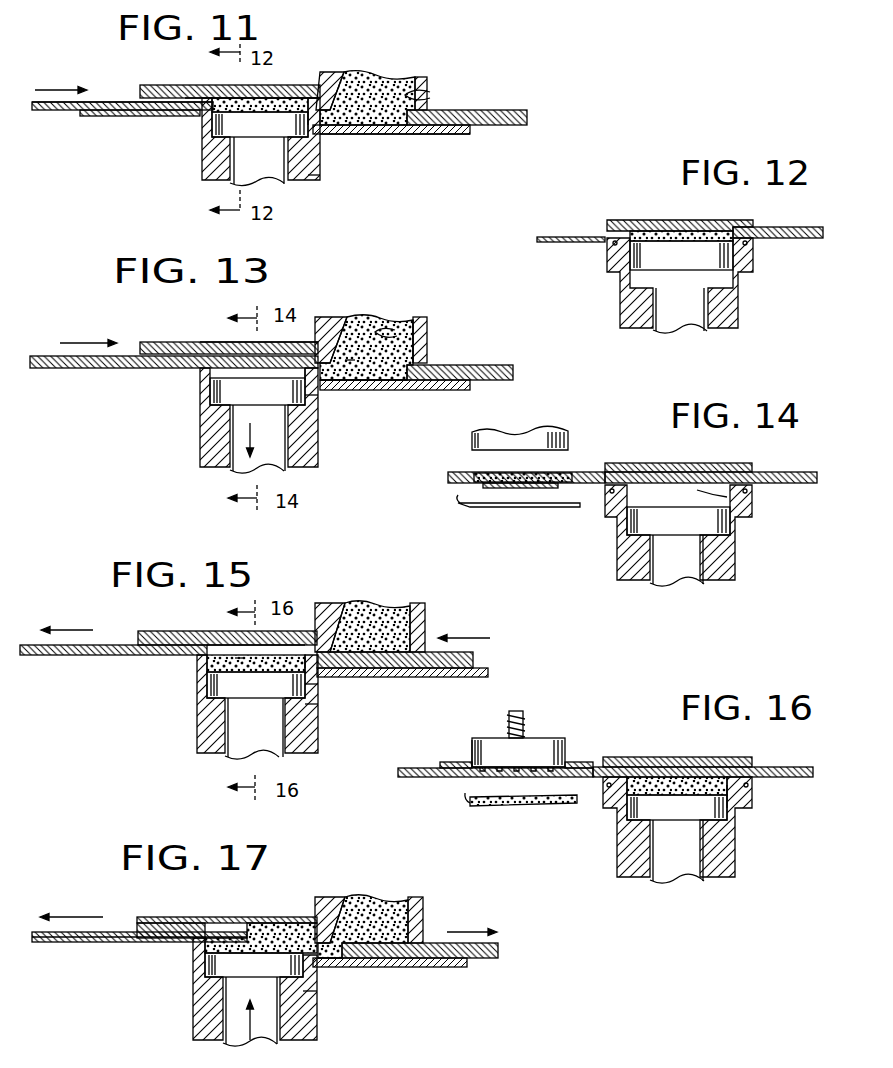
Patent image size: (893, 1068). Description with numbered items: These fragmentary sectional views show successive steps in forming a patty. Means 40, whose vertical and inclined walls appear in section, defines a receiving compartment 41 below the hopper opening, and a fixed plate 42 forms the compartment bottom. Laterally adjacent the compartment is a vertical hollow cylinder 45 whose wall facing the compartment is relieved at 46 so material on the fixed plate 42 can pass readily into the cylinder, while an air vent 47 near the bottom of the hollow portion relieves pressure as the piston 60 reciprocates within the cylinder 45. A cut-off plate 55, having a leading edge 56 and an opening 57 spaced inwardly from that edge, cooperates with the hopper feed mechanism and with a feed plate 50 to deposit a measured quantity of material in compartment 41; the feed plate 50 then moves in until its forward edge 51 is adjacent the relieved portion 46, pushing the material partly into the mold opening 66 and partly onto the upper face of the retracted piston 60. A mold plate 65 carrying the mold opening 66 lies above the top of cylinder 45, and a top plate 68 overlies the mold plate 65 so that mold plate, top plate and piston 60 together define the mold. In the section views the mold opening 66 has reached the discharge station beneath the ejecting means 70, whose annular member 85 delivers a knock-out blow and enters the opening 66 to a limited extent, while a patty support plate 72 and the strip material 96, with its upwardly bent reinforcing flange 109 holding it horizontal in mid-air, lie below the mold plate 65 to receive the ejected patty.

In FIG. 11, the means defining the compartment 40 is at (432, 83).
In FIG. 13, the means defining the compartment 40 is at (427, 321).
In FIG. 15, the means defining the compartment 40 is at (427, 614).
In FIG. 17, the means defining the compartment 40 is at (423, 905).
In FIG. 11, the receiving compartment 41 is at (428, 92).
In FIG. 13, the receiving compartment 41 is at (396, 328).
In FIG. 11, the fixed plate 42 is at (390, 135).
In FIG. 13, the fixed plate 42 is at (417, 391).
In FIG. 15, the fixed plate 42 is at (410, 678).
In FIG. 17, the fixed plate 42 is at (413, 968).
In FIG. 11, the hollow cylinder 45 is at (202, 168).
In FIG. 12, the hollow cylinder 45 is at (740, 303).
In FIG. 13, the hollow cylinder 45 is at (200, 447).
In FIG. 14, the hollow cylinder 45 is at (737, 562).
In FIG. 15, the hollow cylinder 45 is at (197, 732).
In FIG. 16, the hollow cylinder 45 is at (735, 850).
In FIG. 17, the hollow cylinder 45 is at (193, 1023).
In FIG. 11, the relieved portion of cylinder wall 46 is at (322, 118).
In FIG. 13, the relieved portion of cylinder wall 46 is at (318, 373).
In FIG. 15, the relieved portion of cylinder wall 46 is at (335, 665).
In FIG. 11, the air vent 47 is at (320, 158).
In FIG. 13, the air vent 47 is at (318, 395).
In FIG. 15, the air vent 47 is at (318, 704).
In FIG. 17, the air vent 47 is at (317, 991).
In FIG. 11, the feed plate 50 is at (490, 126).
In FIG. 13, the feed plate 50 is at (478, 366).
In FIG. 15, the feed plate 50 is at (473, 660).
In FIG. 17, the feed plate 50 is at (487, 962).
In FIG. 11, the forward edge of feed plate 51 is at (400, 130).
In FIG. 13, the forward edge of feed plate 51 is at (393, 386).
In FIG. 15, the forward edge of feed plate 51 is at (318, 684).
In FIG. 17, the forward edge of feed plate 51 is at (337, 958).
In FIG. 11, the cut-off plate 55 is at (52, 101).
In FIG. 13, the cut-off plate 55 is at (120, 355).
In FIG. 14, the cut-off plate 55 is at (752, 495).
In FIG. 15, the cut-off plate 55 is at (108, 645).
In FIG. 16, the cut-off plate 55 is at (752, 793).
In FIG. 17, the cut-off plate 55 is at (107, 931).
In FIG. 11, the leading edge of cut-off plate 56 is at (160, 114).
In FIG. 13, the leading edge of cut-off plate 56 is at (415, 350).
In FIG. 11, the opening in cut-off plate 57 is at (83, 100).
In FIG. 13, the opening in cut-off plate 57 is at (350, 360).
In FIG. 15, the opening in cut-off plate 57 is at (240, 660).
In FIG. 17, the opening in cut-off plate 57 is at (160, 943).
In FIG. 11, the piston 60 is at (262, 133).
In FIG. 12, the piston 60 is at (687, 266).
In FIG. 13, the piston 60 is at (259, 401).
In FIG. 14, the piston 60 is at (683, 530).
In FIG. 15, the piston 60 is at (259, 694).
In FIG. 16, the piston 60 is at (683, 817).
In FIG. 17, the piston 60 is at (257, 974).
In FIG. 11, the mold plate 65 is at (185, 97).
In FIG. 12, the mold plate 65 is at (797, 227).
In FIG. 13, the mold plate 65 is at (292, 342).
In FIG. 14, the mold plate 65 is at (776, 472).
In FIG. 15, the mold plate 65 is at (205, 644).
In FIG. 16, the mold plate 65 is at (783, 767).
In FIG. 17, the mold plate 65 is at (190, 917).
In FIG. 11, the mold opening 66 is at (205, 112).
In FIG. 12, the mold opening 66 is at (638, 230).
In FIG. 14, the mold opening 66 is at (565, 472).
In FIG. 16, the mold opening 66 is at (477, 772).
In FIG. 17, the mold opening 66 is at (207, 929).
In FIG. 11, the top plate 68 is at (142, 85).
In FIG. 12, the top plate 68 is at (693, 221).
In FIG. 13, the top plate 68 is at (160, 341).
In FIG. 14, the top plate 68 is at (668, 463).
In FIG. 15, the top plate 68 is at (166, 612).
In FIG. 16, the top plate 68 is at (613, 758).
In FIG. 14, the ejecting means 70 is at (567, 432).
In FIG. 16, the ejecting means 70 is at (566, 738).
In FIG. 12, the patty support plate 72 is at (573, 236).
In FIG. 14, the patty support plate 72 is at (542, 489).
In FIG. 16, the patty support plate 72 is at (430, 777).
In FIG. 16, the annular member 85 is at (470, 751).
In FIG. 14, the strip material 96 is at (505, 508).
In FIG. 16, the strip material 96 is at (503, 805).
In FIG. 14, the reinforcing flange 109 is at (458, 497).
In FIG. 16, the reinforcing flange 109 is at (462, 807).